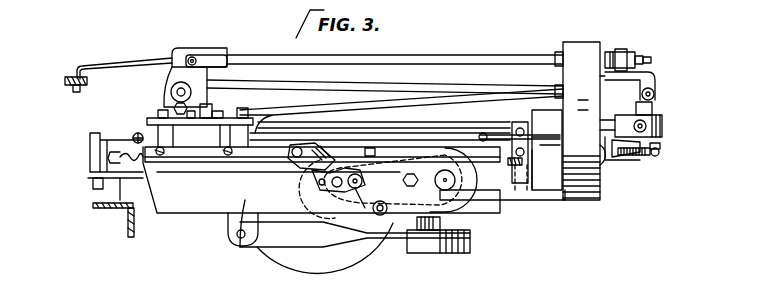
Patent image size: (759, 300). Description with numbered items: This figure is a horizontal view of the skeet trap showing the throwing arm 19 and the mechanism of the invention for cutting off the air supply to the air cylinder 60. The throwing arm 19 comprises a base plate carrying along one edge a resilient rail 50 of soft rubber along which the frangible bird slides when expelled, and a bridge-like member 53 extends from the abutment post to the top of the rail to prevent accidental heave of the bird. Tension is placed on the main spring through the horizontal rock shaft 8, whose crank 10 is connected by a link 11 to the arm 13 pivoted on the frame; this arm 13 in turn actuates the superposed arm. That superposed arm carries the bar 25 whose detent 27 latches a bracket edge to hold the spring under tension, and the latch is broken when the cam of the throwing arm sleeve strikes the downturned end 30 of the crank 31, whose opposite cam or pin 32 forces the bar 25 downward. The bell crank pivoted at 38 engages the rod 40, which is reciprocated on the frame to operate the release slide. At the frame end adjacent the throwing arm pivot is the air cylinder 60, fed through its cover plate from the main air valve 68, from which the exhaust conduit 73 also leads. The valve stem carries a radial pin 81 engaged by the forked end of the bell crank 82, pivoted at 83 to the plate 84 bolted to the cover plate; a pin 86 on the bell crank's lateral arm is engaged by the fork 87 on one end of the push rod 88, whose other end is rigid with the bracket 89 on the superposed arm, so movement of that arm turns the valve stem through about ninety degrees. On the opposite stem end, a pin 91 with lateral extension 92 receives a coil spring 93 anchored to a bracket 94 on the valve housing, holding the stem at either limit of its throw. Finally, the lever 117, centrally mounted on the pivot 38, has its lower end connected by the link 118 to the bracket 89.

The lever 117 is at (62, 79).
The link 118 is at (123, 64).
The bracket 89 is at (190, 48).
The resilient rail 50 is at (209, 159).
The push rod 88 is at (461, 53).
The cam or pin 32 is at (495, 97).
The throwing arm 19 is at (183, 217).
The arm 13 is at (233, 225).
The rod 40 is at (132, 169).
The pivot 38 is at (92, 192).
The bridge-like member 53 is at (300, 166).
The crank 31 is at (482, 151).
The downturned end 30 is at (480, 215).
The bar 25 is at (540, 137).
The detent 27 is at (527, 153).
The plate 84 is at (618, 88).
The air cylinder 60 is at (582, 201).
The bracket 94 is at (596, 166).
The pin 86 is at (617, 50).
The fork 87 is at (624, 49).
The pivot 83 is at (650, 58).
The bell crank 82 is at (655, 76).
The pin or arm 81 is at (656, 95).
The exhaust conduit 73 is at (655, 112).
The main air valve 68 is at (664, 128).
The pin 91 is at (661, 152).
The lateral extension 92 is at (655, 160).
The coil spring 93 is at (645, 165).
The link 11 is at (360, 242).
The rock shaft 8 is at (413, 228).
The crank 10 is at (455, 254).